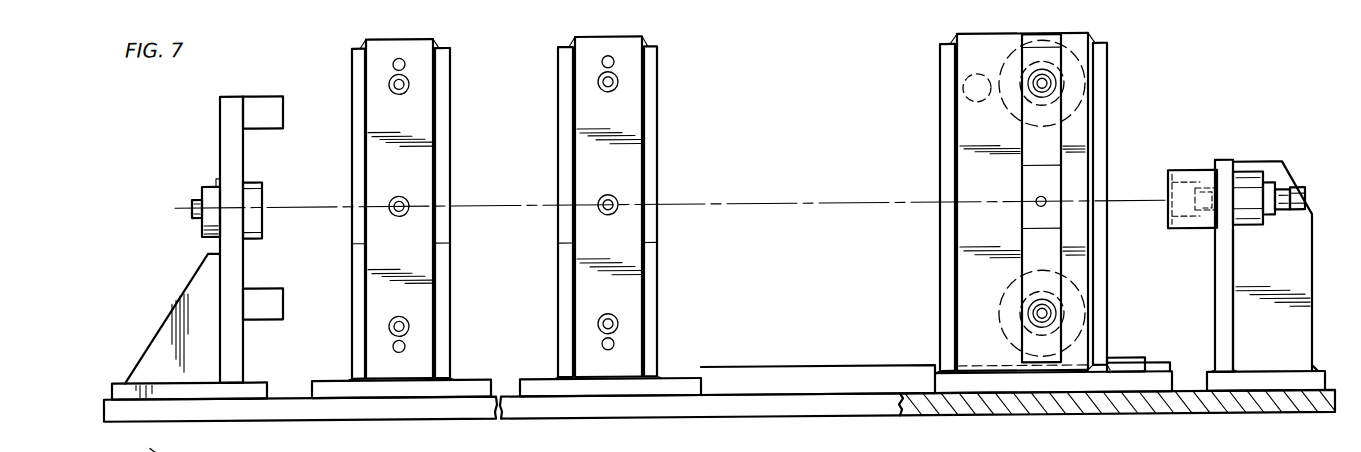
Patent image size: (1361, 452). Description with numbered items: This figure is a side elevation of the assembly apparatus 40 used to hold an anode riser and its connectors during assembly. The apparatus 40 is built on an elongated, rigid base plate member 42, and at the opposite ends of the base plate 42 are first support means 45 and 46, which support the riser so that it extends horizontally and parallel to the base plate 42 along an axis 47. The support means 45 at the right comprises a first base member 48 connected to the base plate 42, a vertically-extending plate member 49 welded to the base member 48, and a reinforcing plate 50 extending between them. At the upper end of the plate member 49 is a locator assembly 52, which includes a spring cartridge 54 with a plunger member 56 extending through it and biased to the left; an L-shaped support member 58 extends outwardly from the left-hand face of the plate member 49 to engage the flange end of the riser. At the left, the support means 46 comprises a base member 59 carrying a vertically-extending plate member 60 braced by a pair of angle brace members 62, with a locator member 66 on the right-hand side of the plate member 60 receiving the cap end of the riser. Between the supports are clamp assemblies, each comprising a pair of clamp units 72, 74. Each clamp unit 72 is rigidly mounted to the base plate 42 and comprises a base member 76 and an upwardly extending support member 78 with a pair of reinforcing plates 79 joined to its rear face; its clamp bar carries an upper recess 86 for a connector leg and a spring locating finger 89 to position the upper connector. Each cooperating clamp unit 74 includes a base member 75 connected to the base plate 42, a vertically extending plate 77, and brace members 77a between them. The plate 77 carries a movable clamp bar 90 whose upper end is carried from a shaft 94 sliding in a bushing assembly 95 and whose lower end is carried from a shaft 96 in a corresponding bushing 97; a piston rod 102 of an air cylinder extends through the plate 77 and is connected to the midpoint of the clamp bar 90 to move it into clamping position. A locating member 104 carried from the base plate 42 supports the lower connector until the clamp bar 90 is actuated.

The apparatus 40 is at (741, 162).
The base plate member 42 is at (486, 415).
The first support means 45 is at (1268, 155).
The support means 46 is at (197, 151).
The axis 47 is at (718, 206).
The first base member 48 is at (1290, 397).
The vertically-extending plate member 49 is at (1222, 289).
The reinforcing plate 50 is at (1296, 248).
The locator assembly 52 is at (1191, 159).
The spring cartridge 54 is at (1205, 210).
The plunger member 56 is at (1291, 197).
The L-shaped support member 58 is at (1168, 226).
The base member 59 is at (186, 386).
The vertically-extending plate member 60 is at (236, 286).
The angle brace members 62 is at (152, 333).
The locator member 66 is at (262, 178).
The clamp unit 72 is at (528, 217).
The clamp unit 74 is at (921, 302).
The base member 75 is at (935, 382).
The base member 76 is at (468, 378).
The vertically extending plate 77 is at (958, 234).
The brace members 77a is at (951, 152).
The support member 78 is at (426, 246).
The reinforcing plates 79 is at (437, 182).
The recess 86 is at (755, 443).
The spring locating finger 89 is at (714, 451).
The movable clamp bar 90 is at (1038, 153).
The shaft 94 is at (1025, 103).
The bearing or bushing assembly 95 is at (1085, 73).
The shaft 96 is at (1030, 319).
The bushing 97 is at (1097, 335).
The piston rod 102 is at (1036, 206).
The locating member 104 is at (790, 368).